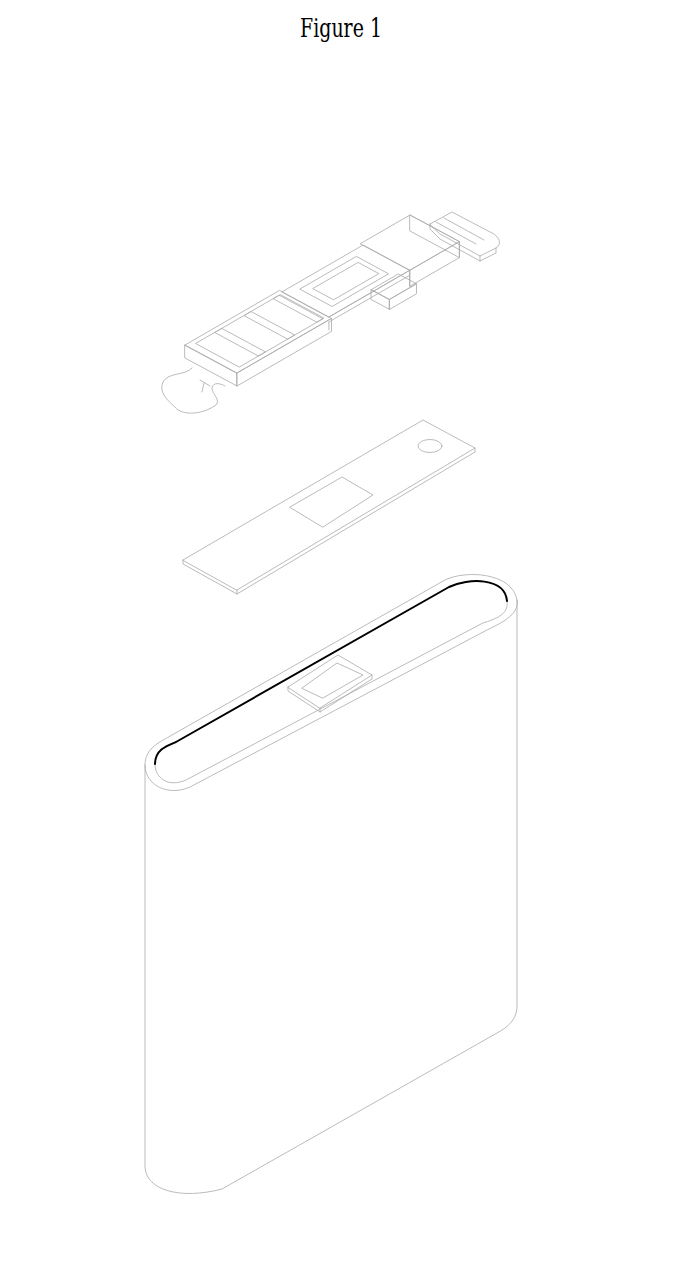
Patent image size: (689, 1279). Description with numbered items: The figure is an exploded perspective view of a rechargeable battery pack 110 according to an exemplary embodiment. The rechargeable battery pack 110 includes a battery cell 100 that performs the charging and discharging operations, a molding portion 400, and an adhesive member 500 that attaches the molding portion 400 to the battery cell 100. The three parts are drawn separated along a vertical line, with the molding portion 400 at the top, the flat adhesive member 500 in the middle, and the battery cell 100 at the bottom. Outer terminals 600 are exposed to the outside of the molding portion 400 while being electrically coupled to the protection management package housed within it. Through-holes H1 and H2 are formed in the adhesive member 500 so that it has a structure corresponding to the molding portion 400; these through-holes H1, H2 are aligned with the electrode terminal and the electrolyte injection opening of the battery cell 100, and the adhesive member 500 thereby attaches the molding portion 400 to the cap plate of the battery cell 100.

The battery cell 100 is at (145, 912).
The rechargeable battery pack 110 is at (505, 518).
The molding portion 400 is at (180, 392).
The adhesive member 500 is at (463, 442).
The outer terminals 600 is at (276, 298).
The through-hole H1 is at (333, 483).
The through-hole H2 is at (430, 440).